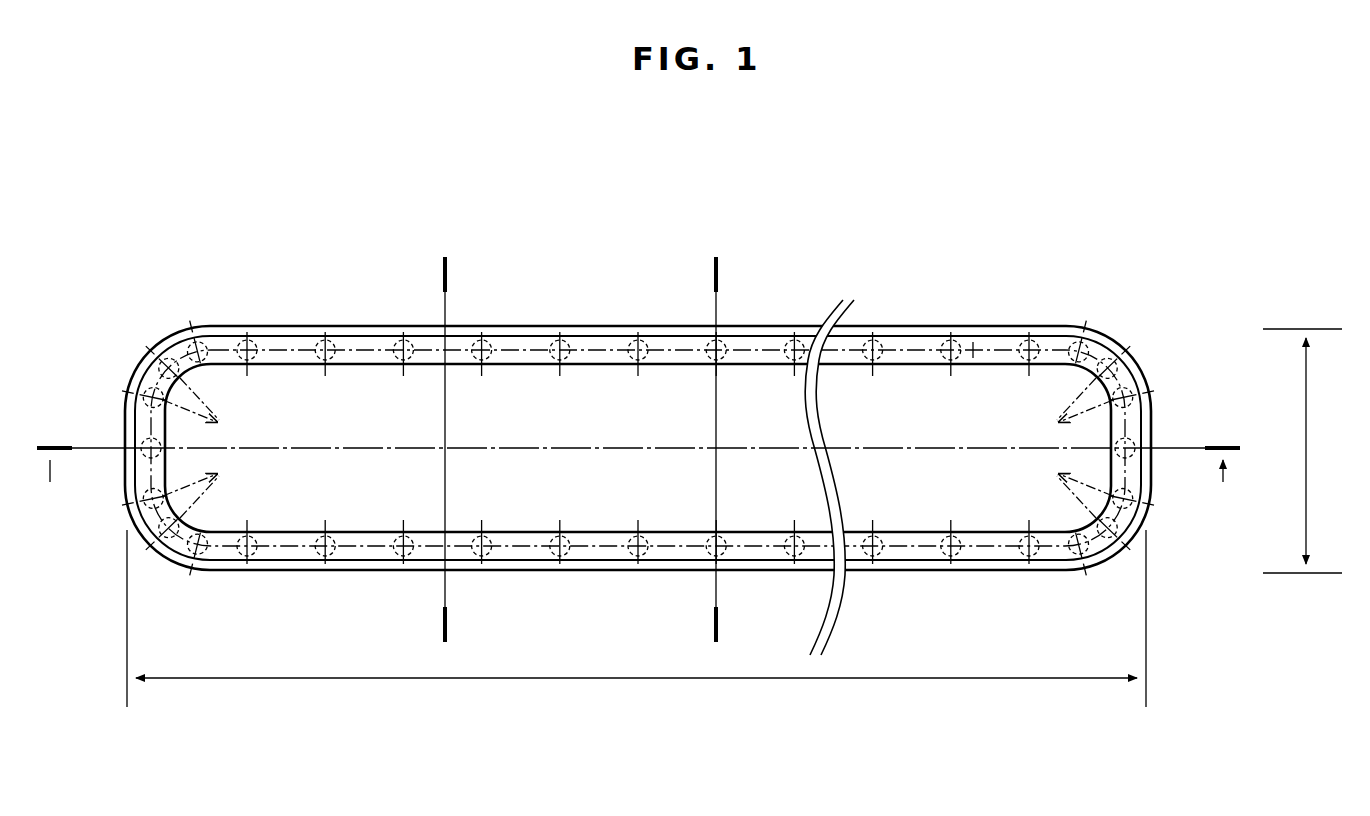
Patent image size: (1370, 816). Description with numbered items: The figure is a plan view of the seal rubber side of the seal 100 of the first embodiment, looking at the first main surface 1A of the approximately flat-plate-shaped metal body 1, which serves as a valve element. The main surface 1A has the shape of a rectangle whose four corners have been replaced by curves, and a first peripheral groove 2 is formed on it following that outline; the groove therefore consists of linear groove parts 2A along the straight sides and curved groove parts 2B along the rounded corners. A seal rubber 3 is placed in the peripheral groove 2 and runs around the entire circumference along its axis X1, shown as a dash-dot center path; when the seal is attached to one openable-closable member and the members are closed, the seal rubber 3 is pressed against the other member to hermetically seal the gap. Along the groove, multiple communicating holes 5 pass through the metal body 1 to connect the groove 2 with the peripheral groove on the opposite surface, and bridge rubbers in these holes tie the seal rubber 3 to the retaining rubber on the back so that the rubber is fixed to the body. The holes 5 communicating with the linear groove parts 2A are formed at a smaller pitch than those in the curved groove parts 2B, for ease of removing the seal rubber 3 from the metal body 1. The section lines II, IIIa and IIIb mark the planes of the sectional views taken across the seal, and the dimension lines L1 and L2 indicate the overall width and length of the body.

The metal body 1 is at (810, 326).
The first main surface 1A is at (893, 390).
The first peripheral groove 2 is at (355, 208).
The linear groove part 2A is at (420, 334).
The curved groove part 2B is at (182, 322).
The seal rubber 3 is at (588, 343).
The communicating hole 5 is at (646, 345).
The seal 100 is at (1131, 302).
The axis of the seal rubber X1 is at (973, 352).
The width dimension L1 is at (1311, 451).
The length dimension L2 is at (846, 680).
The section line II- II is at (638, 485).
The section line IIIa- IIIa is at (729, 627).
The section line IIIb- IIIb is at (458, 623).